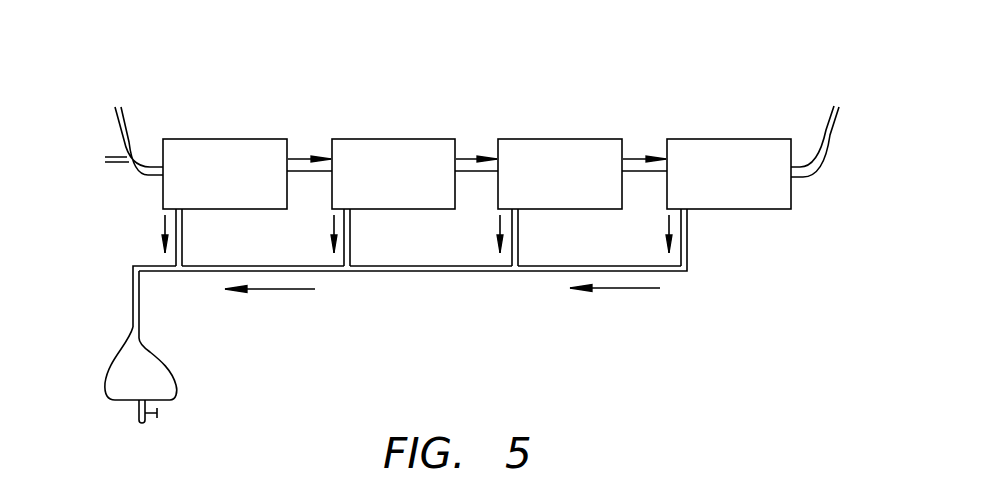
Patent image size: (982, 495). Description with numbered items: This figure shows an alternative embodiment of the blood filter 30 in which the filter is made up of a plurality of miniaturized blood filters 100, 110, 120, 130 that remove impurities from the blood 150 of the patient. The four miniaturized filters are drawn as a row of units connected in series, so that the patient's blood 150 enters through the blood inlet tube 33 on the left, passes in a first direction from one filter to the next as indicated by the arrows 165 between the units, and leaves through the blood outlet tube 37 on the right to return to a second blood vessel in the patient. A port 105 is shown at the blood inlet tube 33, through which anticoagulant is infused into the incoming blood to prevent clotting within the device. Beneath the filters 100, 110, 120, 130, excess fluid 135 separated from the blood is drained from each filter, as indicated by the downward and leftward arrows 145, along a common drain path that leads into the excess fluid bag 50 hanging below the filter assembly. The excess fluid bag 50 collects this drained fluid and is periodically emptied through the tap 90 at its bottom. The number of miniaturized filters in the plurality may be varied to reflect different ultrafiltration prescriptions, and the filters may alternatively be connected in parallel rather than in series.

The blood filter 30 is at (667, 80).
The blood inlet tube 33 is at (122, 108).
The blood outlet tube 37 is at (839, 128).
The excess fluid bag 50 is at (165, 362).
The tap 90 is at (188, 408).
The miniaturized blood filter 100 is at (251, 187).
The port 105 is at (108, 141).
The miniaturized blood filter 110 is at (413, 187).
The miniaturized blood filter 120 is at (579, 187).
The miniaturized blood filter 130 is at (748, 187).
The excess fluid 135 is at (445, 267).
The arrows 145 is at (397, 266).
The blood 150 is at (148, 166).
The arrows 165 is at (477, 145).